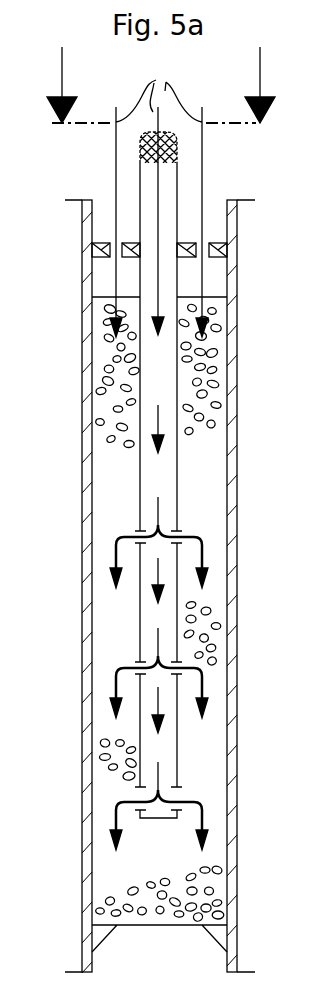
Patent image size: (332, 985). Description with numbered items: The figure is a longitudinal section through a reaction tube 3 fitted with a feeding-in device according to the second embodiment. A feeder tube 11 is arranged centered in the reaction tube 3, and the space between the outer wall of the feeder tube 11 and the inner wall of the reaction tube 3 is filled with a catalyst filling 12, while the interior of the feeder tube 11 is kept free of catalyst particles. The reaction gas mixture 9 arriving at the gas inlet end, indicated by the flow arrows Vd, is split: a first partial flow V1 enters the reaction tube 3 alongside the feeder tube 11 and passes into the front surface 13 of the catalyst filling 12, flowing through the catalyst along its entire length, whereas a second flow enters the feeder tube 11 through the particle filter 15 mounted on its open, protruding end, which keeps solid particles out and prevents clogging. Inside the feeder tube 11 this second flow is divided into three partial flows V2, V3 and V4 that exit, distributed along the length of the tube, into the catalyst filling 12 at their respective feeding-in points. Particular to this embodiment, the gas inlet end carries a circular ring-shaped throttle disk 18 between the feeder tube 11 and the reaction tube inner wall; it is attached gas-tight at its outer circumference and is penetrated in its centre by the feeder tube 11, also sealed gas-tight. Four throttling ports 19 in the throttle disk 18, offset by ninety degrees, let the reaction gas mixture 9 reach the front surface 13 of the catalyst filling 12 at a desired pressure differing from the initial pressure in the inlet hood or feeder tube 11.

The reaction tube 3 is at (237, 343).
The reaction gas mixture 9 is at (159, 91).
The feeder tube 11 is at (177, 465).
The catalyst filling 12 is at (207, 506).
The front surface of the catalyst filling 13 is at (215, 297).
The particle filter 15 is at (180, 132).
The throttle disk 18 is at (213, 243).
The throttling ports 19 is at (204, 242).
The feed flow Vd is at (164, 85).
The first partial flow V1 is at (116, 173).
The second partial flow of the feeder tube V2 is at (203, 555).
The third partial flow of the feeder tube V3 is at (203, 685).
The fourth partial flow of the feeder tube V4 is at (203, 818).